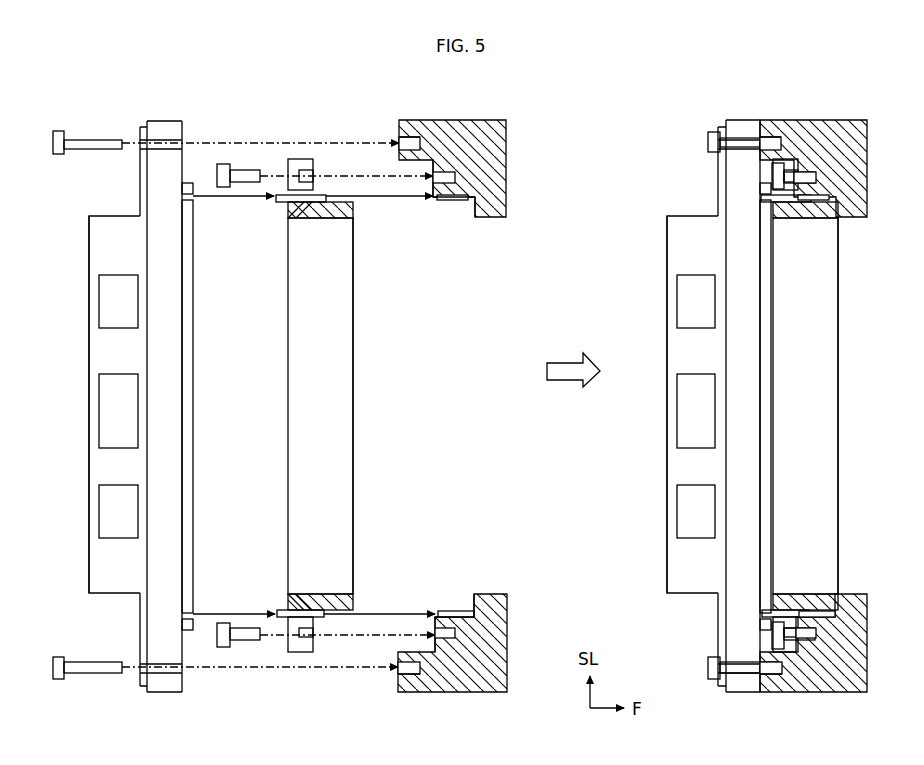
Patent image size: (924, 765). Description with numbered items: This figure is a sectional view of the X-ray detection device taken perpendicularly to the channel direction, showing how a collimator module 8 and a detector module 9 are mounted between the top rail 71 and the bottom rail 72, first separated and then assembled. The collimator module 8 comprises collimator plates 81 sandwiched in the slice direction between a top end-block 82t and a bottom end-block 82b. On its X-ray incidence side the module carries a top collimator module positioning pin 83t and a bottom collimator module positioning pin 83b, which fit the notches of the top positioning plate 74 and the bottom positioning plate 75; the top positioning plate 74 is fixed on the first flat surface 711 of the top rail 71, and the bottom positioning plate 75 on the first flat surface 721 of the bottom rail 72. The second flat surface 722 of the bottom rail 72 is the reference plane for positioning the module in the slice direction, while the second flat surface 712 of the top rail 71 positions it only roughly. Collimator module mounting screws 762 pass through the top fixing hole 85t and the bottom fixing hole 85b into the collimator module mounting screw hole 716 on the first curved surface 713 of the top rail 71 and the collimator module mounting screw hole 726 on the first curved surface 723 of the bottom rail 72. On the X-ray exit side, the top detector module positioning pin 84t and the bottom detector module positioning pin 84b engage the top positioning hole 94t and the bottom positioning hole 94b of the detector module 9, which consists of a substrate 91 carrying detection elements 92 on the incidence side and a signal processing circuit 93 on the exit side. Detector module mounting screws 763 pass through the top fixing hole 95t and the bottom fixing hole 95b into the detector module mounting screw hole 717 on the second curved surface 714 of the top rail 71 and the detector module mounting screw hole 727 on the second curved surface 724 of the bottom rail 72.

The collimator module 8 is at (386, 399).
The detector module 9 is at (206, 436).
The top rail 71 is at (495, 140).
The bottom rail 72 is at (498, 655).
The top positioning plate 74 is at (446, 203).
The bottom positioning plate 75 is at (448, 610).
The collimator plate 81 is at (350, 340).
The top end-block 82t is at (292, 210).
The bottom end-block 82b is at (290, 606).
The top collimator module positioning pin 83t is at (332, 206).
The bottom collimator module positioning pin 83b is at (332, 604).
The top detector module positioning pin 84t is at (278, 200).
The bottom detector module positioning pin 84b is at (278, 612).
The top fixing hole 85t is at (292, 160).
The bottom fixing hole 85b is at (292, 652).
The substrate 91 is at (160, 198).
The detection element 92 is at (196, 398).
The signal processing circuit 93 is at (100, 260).
The top positioning hole 94t is at (187, 183).
The bottom positioning hole 94b is at (187, 630).
The top fixing hole 95t is at (143, 128).
The bottom fixing hole 95b is at (143, 686).
The first flat surface 711 is at (456, 200).
The second flat surface 712 is at (433, 200).
The first curved surface 713 is at (430, 170).
The second curved surface 714 is at (399, 138).
The collimator module mounting screw hole 716 is at (455, 178).
The detector module mounting screw hole 717 is at (405, 136).
The first flat surface 721 is at (462, 611).
The second flat surface 722 is at (436, 614).
The first curved surface 723 is at (434, 633).
The second curved surface 724 is at (398, 672).
The collimator module mounting screw hole 726 is at (455, 633).
The detector module mounting screw hole 727 is at (408, 676).
The collimator module mounting screw 762 is at (224, 164).
The detector module mounting screw 763 is at (57, 131).